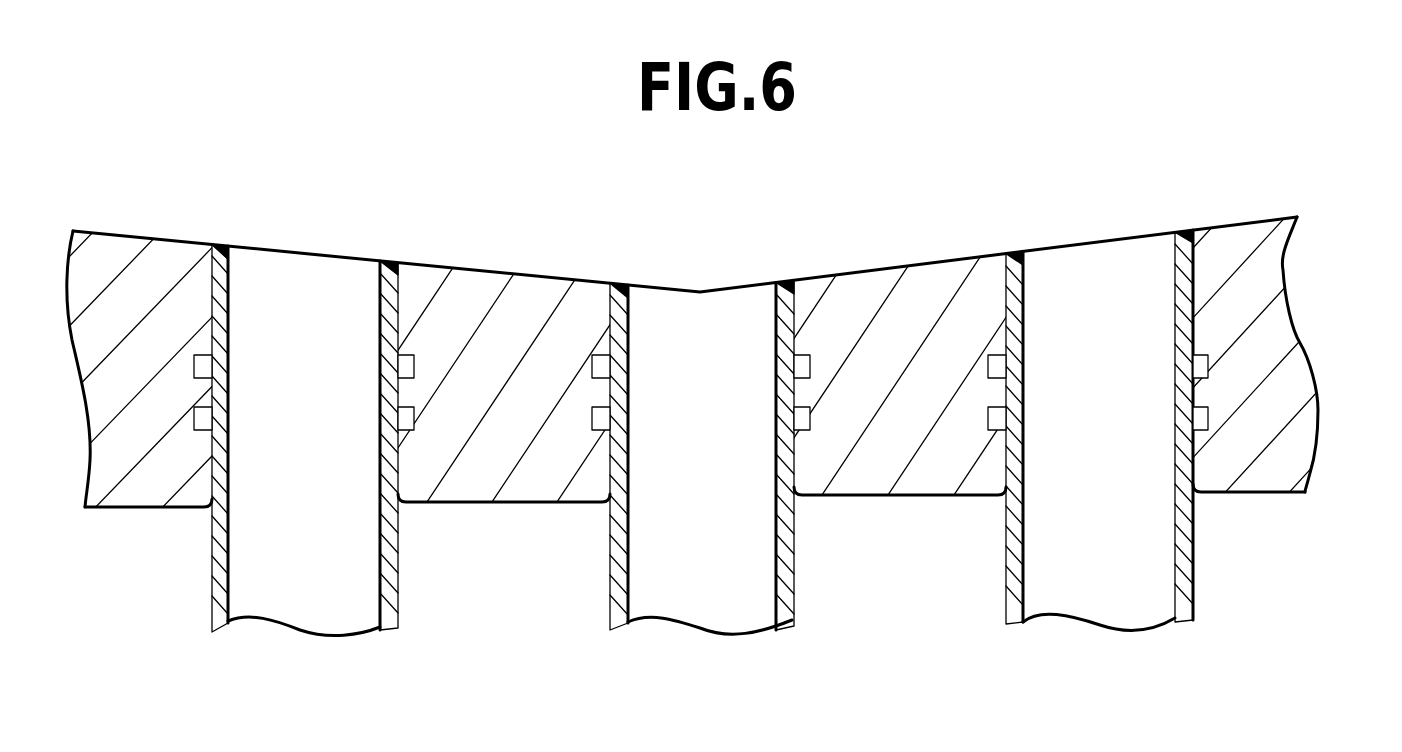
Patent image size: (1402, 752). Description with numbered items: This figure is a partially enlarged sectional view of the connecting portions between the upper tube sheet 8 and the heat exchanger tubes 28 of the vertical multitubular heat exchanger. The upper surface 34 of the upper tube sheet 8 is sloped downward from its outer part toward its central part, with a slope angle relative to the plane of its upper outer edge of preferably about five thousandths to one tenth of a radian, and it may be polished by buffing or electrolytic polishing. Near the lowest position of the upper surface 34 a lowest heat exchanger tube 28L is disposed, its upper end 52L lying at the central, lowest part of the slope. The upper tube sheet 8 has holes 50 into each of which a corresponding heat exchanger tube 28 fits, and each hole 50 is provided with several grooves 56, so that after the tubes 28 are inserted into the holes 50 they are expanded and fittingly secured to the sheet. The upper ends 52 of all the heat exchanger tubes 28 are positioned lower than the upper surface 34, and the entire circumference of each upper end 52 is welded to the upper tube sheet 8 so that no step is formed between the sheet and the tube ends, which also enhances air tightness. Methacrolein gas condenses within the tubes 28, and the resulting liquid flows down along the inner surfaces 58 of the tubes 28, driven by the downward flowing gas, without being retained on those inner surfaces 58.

The upper tube sheet 8 is at (1318, 410).
The heat exchanger tubes 28 is at (212, 598).
The lowest heat exchanger tube 28L is at (795, 612).
The upper surface 34 is at (1253, 220).
The holes 50 is at (229, 282).
The upper ends 52 is at (377, 270).
The upper end of the lowest heat exchanger tube 52L is at (782, 283).
The grooves 56 is at (414, 356).
The inner surfaces 58 is at (1230, 283).